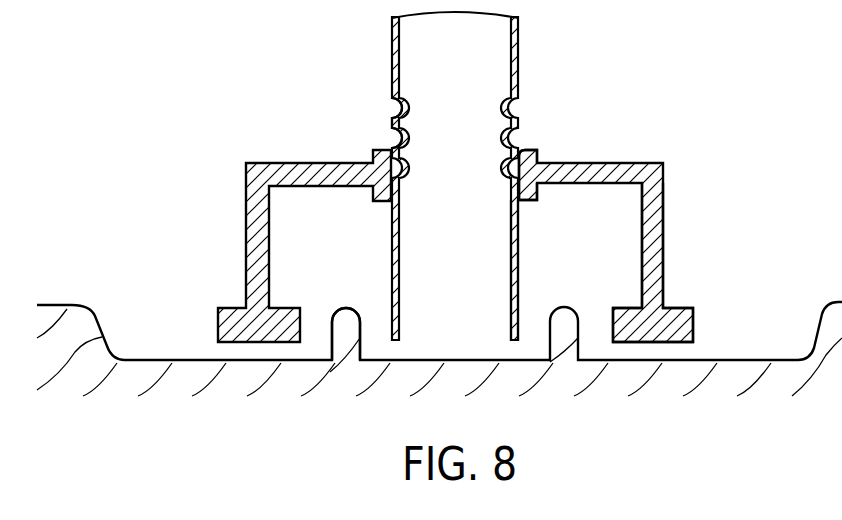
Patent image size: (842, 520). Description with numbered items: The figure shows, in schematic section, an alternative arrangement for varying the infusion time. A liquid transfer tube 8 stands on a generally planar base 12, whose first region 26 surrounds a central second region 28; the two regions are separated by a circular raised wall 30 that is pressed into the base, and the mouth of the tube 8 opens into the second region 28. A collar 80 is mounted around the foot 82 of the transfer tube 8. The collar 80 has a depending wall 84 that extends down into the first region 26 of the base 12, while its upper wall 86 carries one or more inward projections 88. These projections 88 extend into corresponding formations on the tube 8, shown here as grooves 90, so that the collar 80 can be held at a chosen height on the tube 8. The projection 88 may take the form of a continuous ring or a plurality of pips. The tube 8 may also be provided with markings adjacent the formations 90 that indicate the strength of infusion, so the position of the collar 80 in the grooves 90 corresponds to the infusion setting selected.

The liquid transfer tube 8 is at (519, 54).
The base 12 is at (748, 359).
The first region 26 is at (178, 360).
The second region 28 is at (371, 360).
The circular raised wall 30 is at (346, 308).
The collar 80 is at (630, 162).
The foot 82 is at (519, 259).
The depending wall 84 is at (664, 259).
The upper wall 86 is at (322, 162).
The inward projection 88 is at (531, 152).
The groove 90 is at (392, 108).